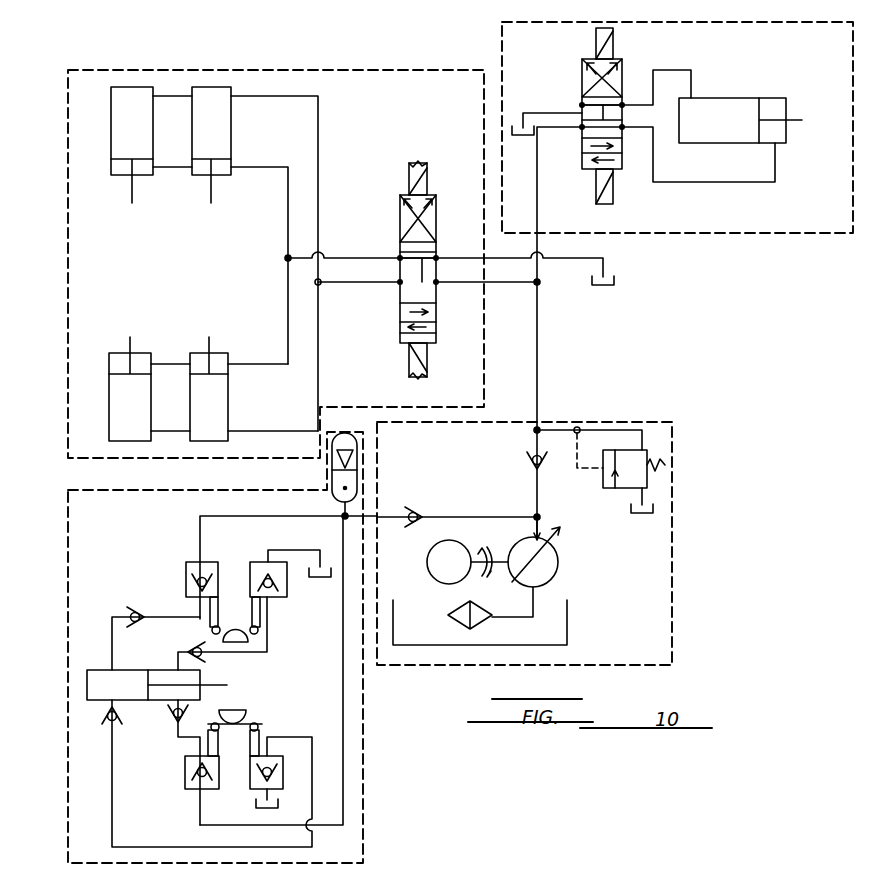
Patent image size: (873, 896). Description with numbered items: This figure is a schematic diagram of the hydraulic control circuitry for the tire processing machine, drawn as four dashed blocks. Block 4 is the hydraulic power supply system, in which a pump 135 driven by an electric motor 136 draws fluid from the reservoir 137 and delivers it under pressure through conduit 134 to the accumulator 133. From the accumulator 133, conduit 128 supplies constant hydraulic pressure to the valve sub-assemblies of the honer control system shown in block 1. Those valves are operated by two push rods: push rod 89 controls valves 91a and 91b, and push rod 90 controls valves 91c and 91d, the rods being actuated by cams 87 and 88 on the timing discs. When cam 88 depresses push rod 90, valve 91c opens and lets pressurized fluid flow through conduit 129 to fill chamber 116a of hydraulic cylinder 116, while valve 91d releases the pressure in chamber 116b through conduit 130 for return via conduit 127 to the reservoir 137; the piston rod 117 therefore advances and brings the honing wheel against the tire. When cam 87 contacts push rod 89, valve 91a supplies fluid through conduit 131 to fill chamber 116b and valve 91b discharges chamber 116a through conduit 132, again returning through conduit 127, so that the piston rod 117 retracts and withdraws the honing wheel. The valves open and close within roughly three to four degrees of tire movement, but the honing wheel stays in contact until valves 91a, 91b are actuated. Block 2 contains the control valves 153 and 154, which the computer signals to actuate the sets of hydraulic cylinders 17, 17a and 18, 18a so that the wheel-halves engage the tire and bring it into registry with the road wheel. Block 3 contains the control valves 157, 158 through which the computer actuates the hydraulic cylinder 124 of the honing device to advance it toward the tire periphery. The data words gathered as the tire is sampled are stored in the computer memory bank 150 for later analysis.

The honer control system block 1 is at (313, 695).
The wheel-half actuation block 2 is at (180, 275).
The honing device actuation block 3 is at (819, 182).
The hydraulic power supply system block 4 is at (626, 615).
The hydraulic cylinder 17 is at (132, 145).
The hydraulic cylinder 17a is at (211, 145).
The hydraulic cylinder 18 is at (120, 402).
The hydraulic cylinder 18a is at (220, 400).
The cam 87 is at (247, 712).
The cam 88 is at (243, 645).
The push rod 89 is at (235, 745).
The push rod 90 is at (235, 615).
The valve 91a is at (185, 770).
The valve 91b is at (283, 777).
The valve 91c is at (186, 574).
The valve 91d is at (287, 597).
The hydraulic cylinder 116 is at (90, 700).
The chamber 116a is at (122, 685).
The chamber 116b is at (163, 662).
The piston rod 117 is at (231, 679).
The hydraulic cylinder 124 is at (717, 98).
The conduit 127 is at (283, 549).
The conduit 128 is at (255, 516).
The conduit 129 is at (112, 631).
The conduit 130 is at (272, 650).
The conduit 131 is at (175, 735).
The conduit 132 is at (112, 815).
The accumulator 133 is at (358, 460).
The conduit 134 is at (453, 517).
The pump 135 is at (560, 562).
The electric motor 136 is at (428, 560).
The reservoir 137 is at (520, 140).
The computer memory bank 150 is at (622, 894).
The control valve 153 is at (400, 216).
The control valve 154 is at (400, 312).
The control valve 157 is at (617, 60).
The control valve 158 is at (620, 153).